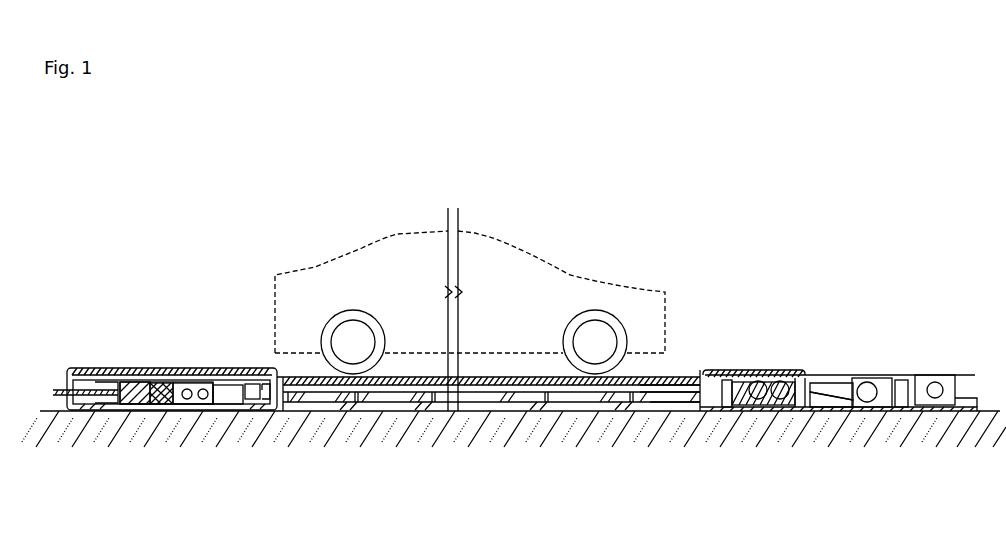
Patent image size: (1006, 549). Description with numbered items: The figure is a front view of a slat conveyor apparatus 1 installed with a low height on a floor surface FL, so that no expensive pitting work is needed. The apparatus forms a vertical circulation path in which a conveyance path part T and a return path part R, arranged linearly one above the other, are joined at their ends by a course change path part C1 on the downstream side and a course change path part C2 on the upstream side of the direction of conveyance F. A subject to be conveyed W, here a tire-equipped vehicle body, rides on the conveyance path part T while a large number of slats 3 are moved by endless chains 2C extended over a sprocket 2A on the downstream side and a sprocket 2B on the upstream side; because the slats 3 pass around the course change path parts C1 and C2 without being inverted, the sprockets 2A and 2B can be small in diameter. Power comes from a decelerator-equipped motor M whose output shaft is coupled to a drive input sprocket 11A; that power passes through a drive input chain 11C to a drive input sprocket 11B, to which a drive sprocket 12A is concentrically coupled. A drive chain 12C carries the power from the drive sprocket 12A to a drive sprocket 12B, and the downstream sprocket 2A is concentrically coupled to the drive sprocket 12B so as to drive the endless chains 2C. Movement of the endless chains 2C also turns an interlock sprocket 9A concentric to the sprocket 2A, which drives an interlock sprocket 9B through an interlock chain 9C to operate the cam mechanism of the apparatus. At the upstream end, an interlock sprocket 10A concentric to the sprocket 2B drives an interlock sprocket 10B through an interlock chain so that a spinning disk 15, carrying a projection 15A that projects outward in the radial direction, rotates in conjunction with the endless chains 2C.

The slat conveyor apparatus 1 is at (796, 275).
The slat 3 is at (300, 377).
The sprocket on the upstream side 2B is at (165, 360).
The interlock sprocket 10A is at (200, 380).
The endless chain 2C is at (380, 412).
The interlock sprocket 10B is at (142, 380).
The spinning disk 15 is at (163, 404).
The projection 15A is at (125, 404).
The course change path part on the upstream side C2 is at (167, 371).
The course change path part on the downstream side C1 is at (756, 359).
The conveyance path part T is at (690, 366).
The return path part R is at (667, 412).
The interlock sprocket 9A is at (784, 412).
The interlock sprocket 9B is at (727, 408).
The interlock chain 9C is at (756, 412).
The drive sprocket 12B is at (814, 351).
The sprocket on the downstream side 2A is at (795, 380).
The drive chain 12C is at (822, 412).
The drive input sprocket 11B is at (865, 354).
The drive sprocket 12A is at (867, 380).
The drive input sprocket 11A is at (940, 374).
The drive input chain 11C is at (897, 412).
The decelerator-equipped motor M is at (924, 352).
The subject to be conveyed W is at (318, 262).
The direction of conveyance F is at (416, 213).
The floor surface FL is at (995, 409).